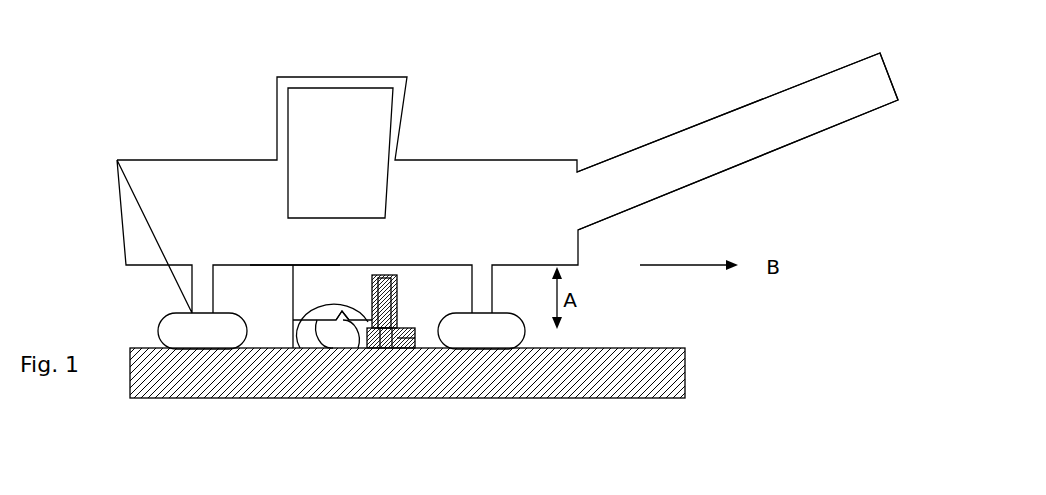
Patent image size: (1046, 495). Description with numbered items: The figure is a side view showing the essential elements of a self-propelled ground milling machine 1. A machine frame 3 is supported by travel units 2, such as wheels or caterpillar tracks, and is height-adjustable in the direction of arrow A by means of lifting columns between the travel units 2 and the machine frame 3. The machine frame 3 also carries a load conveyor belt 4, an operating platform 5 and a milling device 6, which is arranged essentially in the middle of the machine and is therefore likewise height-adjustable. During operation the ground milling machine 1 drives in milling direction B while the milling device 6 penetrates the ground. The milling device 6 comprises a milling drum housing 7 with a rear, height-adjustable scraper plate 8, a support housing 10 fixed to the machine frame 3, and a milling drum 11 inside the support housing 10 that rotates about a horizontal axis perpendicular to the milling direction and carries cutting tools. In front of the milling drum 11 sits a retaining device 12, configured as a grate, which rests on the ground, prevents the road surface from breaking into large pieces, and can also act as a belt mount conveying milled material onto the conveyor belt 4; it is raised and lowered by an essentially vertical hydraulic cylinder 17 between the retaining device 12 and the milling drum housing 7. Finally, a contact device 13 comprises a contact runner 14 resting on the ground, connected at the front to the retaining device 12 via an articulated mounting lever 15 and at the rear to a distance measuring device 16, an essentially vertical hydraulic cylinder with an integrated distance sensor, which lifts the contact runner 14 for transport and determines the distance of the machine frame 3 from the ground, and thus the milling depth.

The ground milling machine 1 is at (491, 124).
The travel units 2 is at (217, 332).
The machine frame 3 is at (160, 245).
The load conveyor belt 4 is at (775, 128).
The operating platform 5 is at (313, 120).
The milling device 6 is at (404, 313).
The milling drum housing 7 is at (298, 264).
The scraper plate 8 is at (305, 333).
The support housing 10 is at (318, 293).
The milling drum 11 is at (340, 328).
The retaining device 12 is at (375, 340).
The contact device 13 is at (392, 340).
The contact runner 14 is at (398, 342).
The mounting lever 15 is at (387, 340).
The distance measuring device 16 is at (386, 292).
The hydraulic cylinder 17 is at (378, 290).